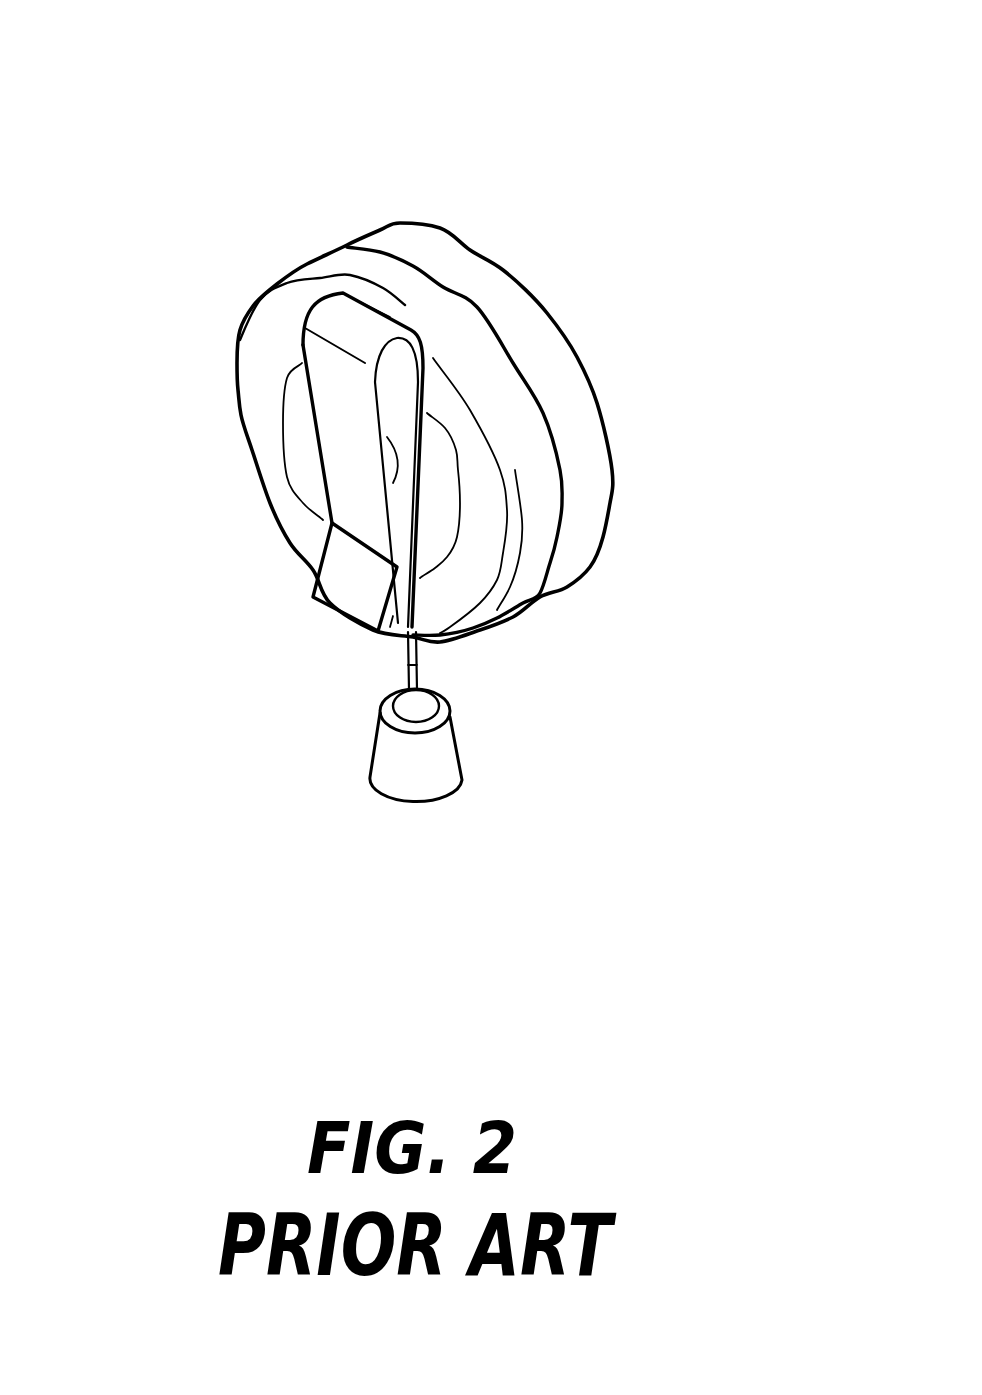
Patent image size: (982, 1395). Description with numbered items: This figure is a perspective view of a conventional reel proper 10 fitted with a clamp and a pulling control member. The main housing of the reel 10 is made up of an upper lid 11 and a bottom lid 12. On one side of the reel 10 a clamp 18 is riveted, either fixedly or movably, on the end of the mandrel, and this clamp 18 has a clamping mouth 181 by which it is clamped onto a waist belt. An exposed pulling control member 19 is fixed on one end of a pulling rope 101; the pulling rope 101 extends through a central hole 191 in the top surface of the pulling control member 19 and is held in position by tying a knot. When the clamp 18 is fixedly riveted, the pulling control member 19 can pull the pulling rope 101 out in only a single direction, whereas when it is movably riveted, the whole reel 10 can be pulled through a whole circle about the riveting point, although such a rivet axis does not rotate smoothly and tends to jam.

The reel proper 10 is at (510, 228).
The upper lid 11 is at (373, 273).
The bottom lid 12 is at (408, 243).
The clamp 18 is at (372, 337).
The clamping mouth 181 is at (390, 627).
The pulling rope 101 is at (413, 663).
The pulling control member 19 is at (438, 770).
The central hole 191 is at (447, 695).